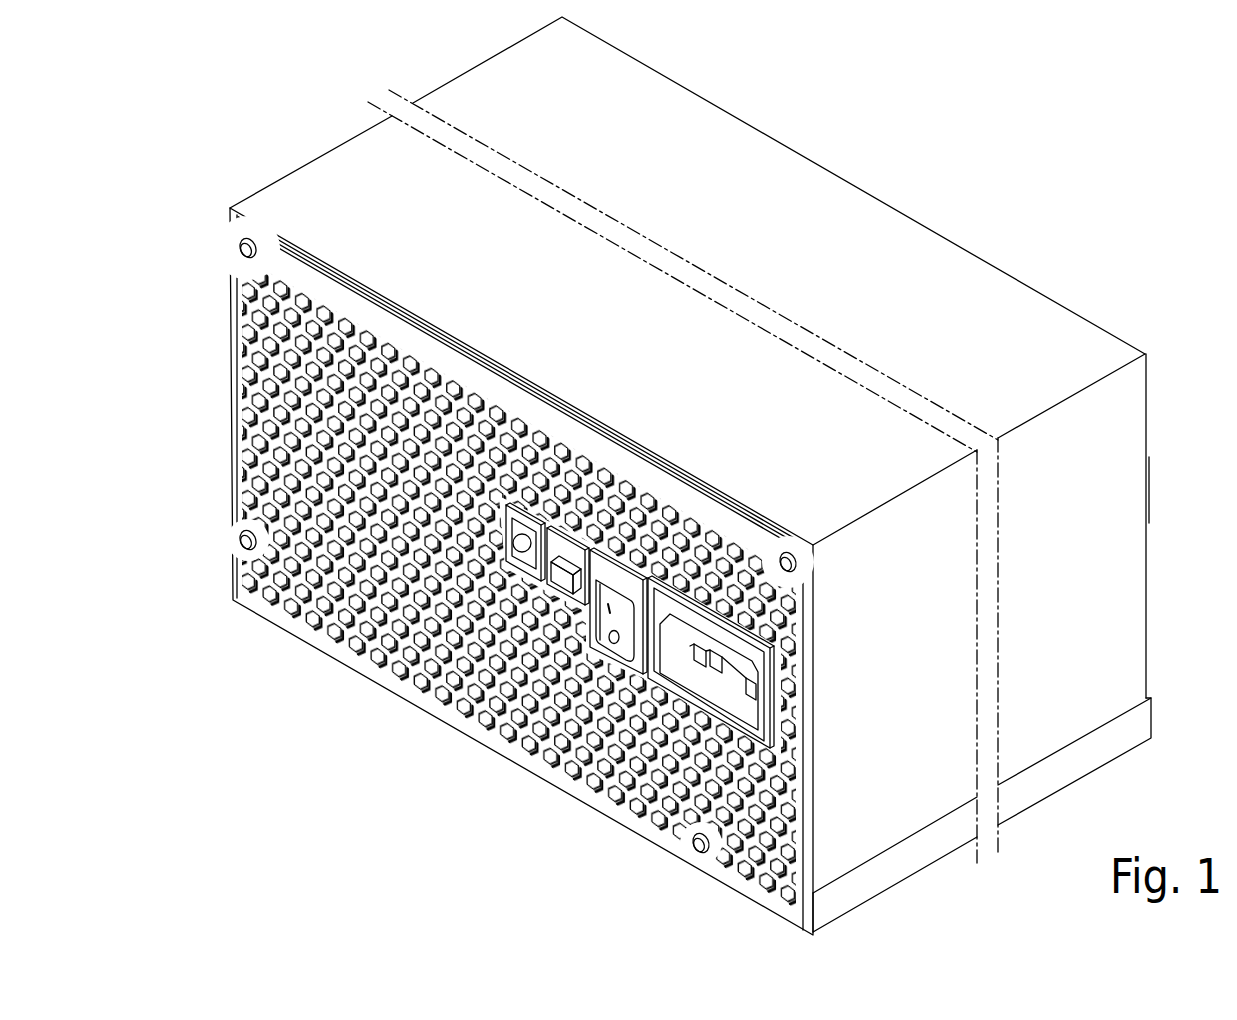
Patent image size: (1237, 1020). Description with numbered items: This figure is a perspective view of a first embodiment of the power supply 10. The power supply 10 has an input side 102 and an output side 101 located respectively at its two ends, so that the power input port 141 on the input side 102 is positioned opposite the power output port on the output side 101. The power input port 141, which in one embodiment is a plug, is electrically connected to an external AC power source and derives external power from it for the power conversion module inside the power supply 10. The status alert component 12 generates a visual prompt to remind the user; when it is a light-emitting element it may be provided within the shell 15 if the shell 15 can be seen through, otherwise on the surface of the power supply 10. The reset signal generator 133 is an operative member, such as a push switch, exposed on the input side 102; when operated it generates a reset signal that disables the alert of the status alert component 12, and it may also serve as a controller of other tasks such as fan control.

The power supply 10 is at (701, 474).
The output side 101 is at (852, 180).
The input side 102 is at (260, 617).
The shell 15 is at (1085, 340).
The status alert component 12 is at (519, 548).
The reset signal generator 133 is at (560, 572).
The power input port 141 is at (690, 690).